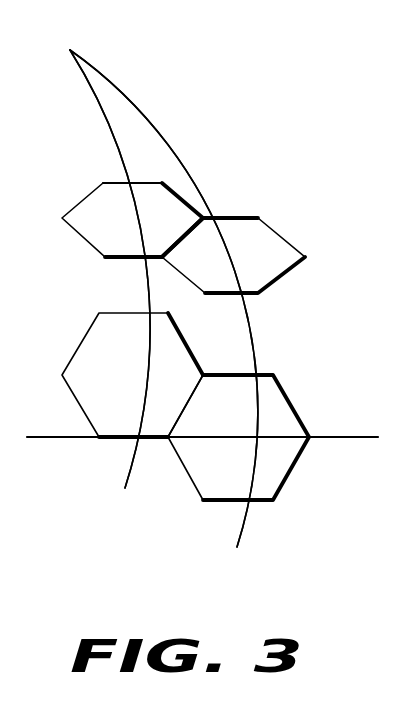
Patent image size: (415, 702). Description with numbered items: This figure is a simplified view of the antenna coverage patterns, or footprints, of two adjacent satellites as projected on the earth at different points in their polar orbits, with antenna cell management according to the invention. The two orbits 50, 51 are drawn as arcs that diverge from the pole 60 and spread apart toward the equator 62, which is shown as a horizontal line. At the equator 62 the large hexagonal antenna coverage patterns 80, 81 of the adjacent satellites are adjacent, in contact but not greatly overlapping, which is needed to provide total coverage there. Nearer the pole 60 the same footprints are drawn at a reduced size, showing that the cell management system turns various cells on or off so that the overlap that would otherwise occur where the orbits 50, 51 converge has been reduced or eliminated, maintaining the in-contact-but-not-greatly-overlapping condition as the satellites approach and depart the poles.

The pole 60 is at (69, 50).
The orbit 51 is at (134, 101).
The orbit 50 is at (97, 96).
The antenna coverage pattern 80 is at (78, 348).
The antenna coverage pattern 81 is at (292, 403).
The equator 62 is at (352, 440).